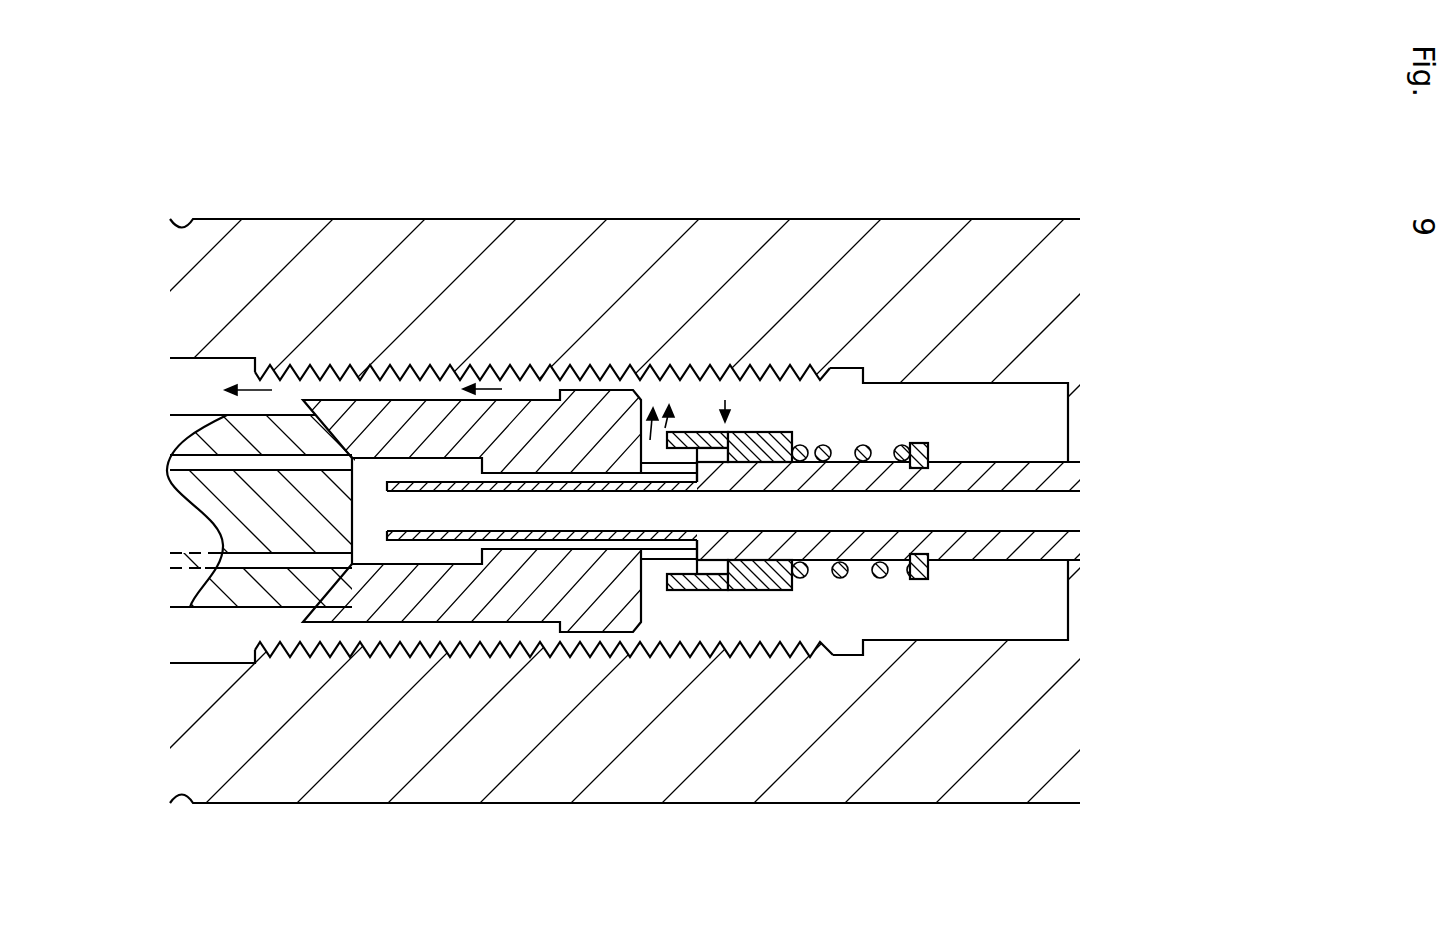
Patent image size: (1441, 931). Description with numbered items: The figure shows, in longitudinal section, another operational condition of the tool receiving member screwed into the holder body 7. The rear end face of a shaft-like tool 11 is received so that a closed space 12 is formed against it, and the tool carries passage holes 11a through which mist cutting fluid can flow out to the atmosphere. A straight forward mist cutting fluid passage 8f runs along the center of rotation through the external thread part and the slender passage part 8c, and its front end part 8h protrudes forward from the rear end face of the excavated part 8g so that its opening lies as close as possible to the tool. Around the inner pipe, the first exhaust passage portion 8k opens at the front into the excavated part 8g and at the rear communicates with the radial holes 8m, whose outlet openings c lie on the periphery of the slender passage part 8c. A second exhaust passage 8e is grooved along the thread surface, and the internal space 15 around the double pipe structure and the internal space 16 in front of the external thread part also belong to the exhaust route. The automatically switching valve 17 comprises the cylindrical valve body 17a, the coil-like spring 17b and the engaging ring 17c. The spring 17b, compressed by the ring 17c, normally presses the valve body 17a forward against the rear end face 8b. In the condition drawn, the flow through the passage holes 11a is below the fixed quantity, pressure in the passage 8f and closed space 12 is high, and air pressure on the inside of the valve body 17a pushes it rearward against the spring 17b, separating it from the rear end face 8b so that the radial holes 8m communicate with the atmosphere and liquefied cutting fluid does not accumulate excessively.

The holder body 7 is at (815, 790).
The rear end face of the external thread part 8b is at (642, 607).
The slender passage part 8c is at (960, 553).
The second exhaust passage 8e is at (412, 392).
The forward mist cutting fluid passage 8f is at (556, 515).
The excavated part 8g is at (442, 472).
The front end part of the forward mist cutting fluid passage 8h is at (432, 545).
The first exhaust passage portion 8k is at (550, 475).
The radial holes 8m is at (685, 552).
The shaft-like tool 11 is at (210, 614).
The passage holes 11a is at (192, 457).
The closed space 12 is at (368, 507).
The internal space of the holder body 15 is at (890, 403).
The internal space of the holder body 16 is at (200, 373).
The automatically switching valve 17 is at (733, 375).
The cylindrical valve body 17a is at (767, 432).
The coil-like spring 17b is at (840, 580).
The engaging ring 17c is at (920, 443).
The outlet openings c is at (682, 462).